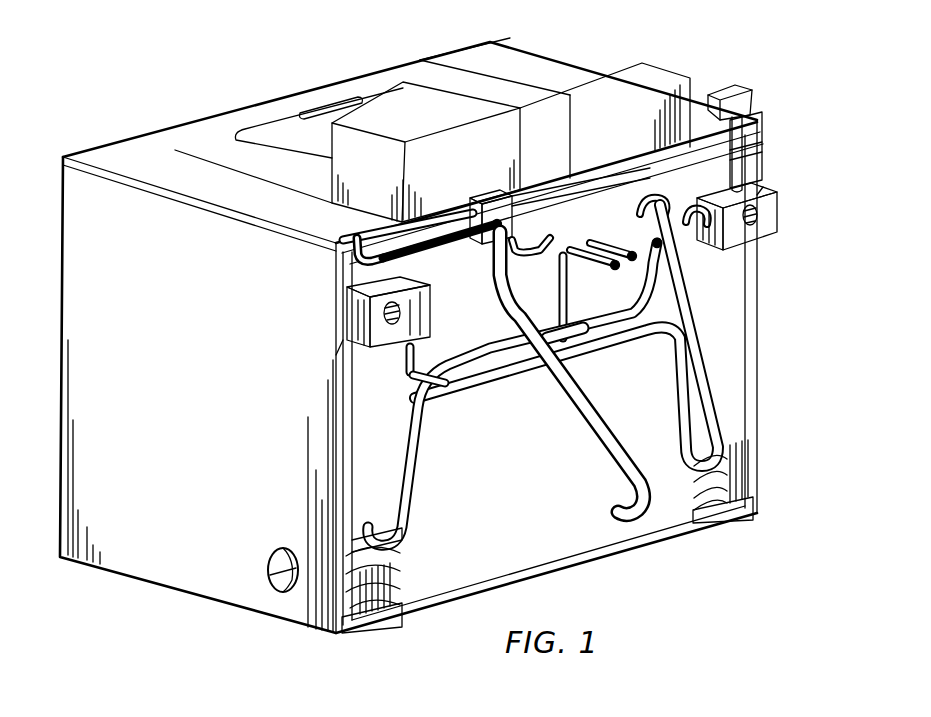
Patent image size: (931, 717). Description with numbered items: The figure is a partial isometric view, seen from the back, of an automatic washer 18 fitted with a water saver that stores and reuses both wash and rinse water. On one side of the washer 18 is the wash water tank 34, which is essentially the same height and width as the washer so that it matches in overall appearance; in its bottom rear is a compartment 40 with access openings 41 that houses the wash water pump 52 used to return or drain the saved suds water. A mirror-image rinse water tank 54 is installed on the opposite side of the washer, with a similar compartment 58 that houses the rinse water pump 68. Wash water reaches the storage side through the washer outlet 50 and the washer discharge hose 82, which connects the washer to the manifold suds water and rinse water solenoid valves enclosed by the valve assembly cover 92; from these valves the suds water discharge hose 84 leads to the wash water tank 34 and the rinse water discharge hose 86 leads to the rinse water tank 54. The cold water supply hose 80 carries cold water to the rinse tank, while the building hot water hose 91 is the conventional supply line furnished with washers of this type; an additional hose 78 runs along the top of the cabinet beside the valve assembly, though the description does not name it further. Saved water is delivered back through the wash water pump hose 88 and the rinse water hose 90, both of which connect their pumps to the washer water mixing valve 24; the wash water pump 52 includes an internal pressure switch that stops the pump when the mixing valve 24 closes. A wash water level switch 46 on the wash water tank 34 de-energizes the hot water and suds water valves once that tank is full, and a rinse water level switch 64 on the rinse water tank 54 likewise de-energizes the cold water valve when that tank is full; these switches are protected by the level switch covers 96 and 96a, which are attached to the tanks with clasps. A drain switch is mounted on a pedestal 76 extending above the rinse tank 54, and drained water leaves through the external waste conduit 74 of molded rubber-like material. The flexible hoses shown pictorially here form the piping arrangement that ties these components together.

The automatic washer 18 is at (280, 97).
The water mixing valve 24 is at (705, 150).
The wash water tank 34 is at (150, 582).
The compartment 40 is at (367, 615).
The access openings 41 is at (278, 595).
The wash water level switch 46 is at (386, 311).
The washer outlet 50 is at (560, 536).
The wash water pump 52 is at (333, 617).
The rinse water tank 54 is at (759, 376).
The compartment 58 is at (740, 524).
The rinse water level switch 64 is at (762, 217).
The rinse water pump 68 is at (752, 463).
The external waste conduit 74 is at (650, 200).
The pedestal 76 is at (750, 123).
The tube 78 is at (433, 230).
The cold water supply hose 80 is at (587, 233).
The washer discharge hose 82 is at (595, 445).
The suds water discharge hose 84 is at (330, 243).
The rinse water discharge hose 86 is at (760, 143).
The wash water pump hose 88 is at (457, 400).
The rinse water hose 90 is at (700, 337).
The building hot water hose 91 is at (563, 233).
The valve assembly cover 92 is at (492, 195).
The level switch cover 96 is at (343, 340).
The level switch cover 96a is at (763, 187).